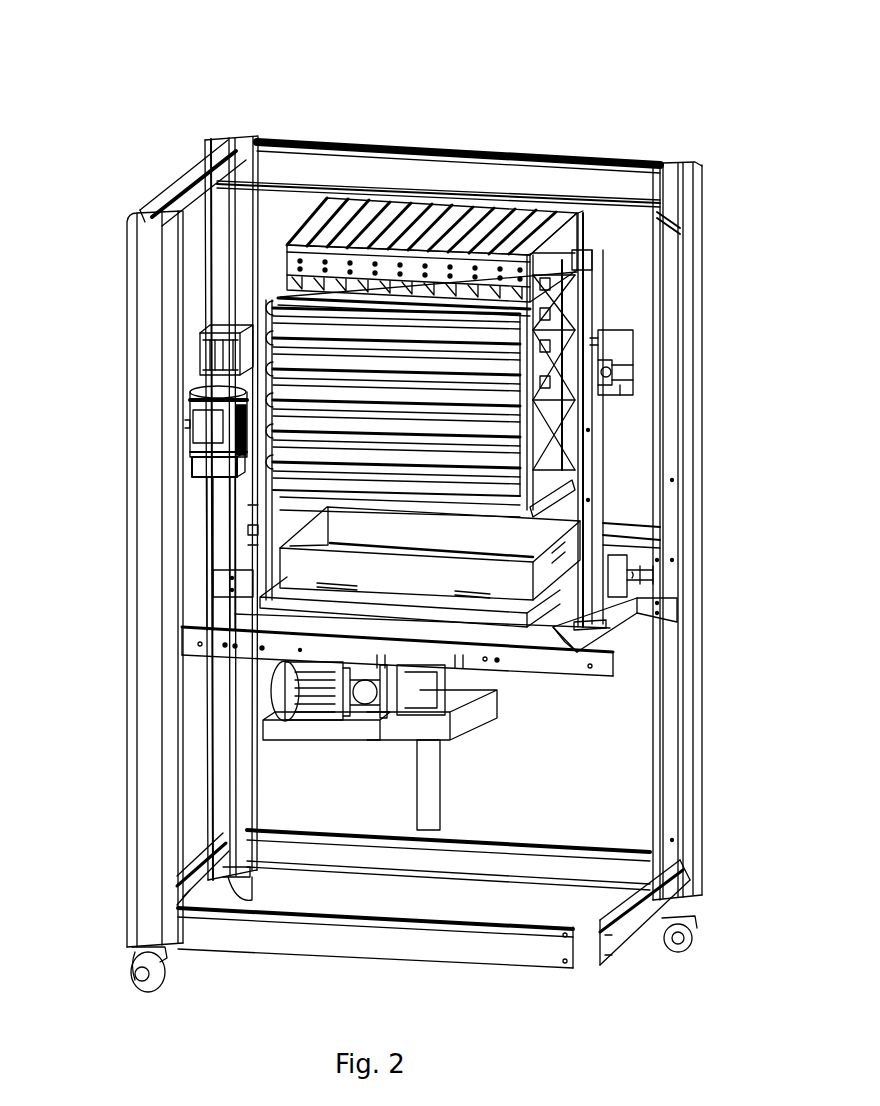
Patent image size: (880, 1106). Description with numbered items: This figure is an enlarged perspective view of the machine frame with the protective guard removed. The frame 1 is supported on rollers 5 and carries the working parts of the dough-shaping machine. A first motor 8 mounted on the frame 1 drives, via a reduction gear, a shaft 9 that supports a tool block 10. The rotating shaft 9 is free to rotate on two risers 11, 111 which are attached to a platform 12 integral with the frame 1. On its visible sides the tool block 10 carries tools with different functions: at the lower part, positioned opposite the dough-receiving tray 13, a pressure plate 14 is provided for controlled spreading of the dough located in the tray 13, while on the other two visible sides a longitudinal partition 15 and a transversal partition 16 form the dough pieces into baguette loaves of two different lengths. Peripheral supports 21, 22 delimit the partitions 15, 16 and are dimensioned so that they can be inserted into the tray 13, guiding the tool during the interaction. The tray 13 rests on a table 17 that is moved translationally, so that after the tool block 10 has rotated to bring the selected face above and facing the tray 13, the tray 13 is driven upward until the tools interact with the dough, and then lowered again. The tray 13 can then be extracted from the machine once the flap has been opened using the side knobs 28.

The frame 1 is at (490, 147).
The rollers 5 is at (180, 988).
The first motor 8 is at (208, 468).
The shaft 9 is at (603, 343).
The tool block 10 is at (600, 240).
The riser 11 is at (620, 450).
The platform 12 is at (612, 637).
The dough-receiving tray 13 is at (516, 583).
The pressure plate 14 is at (552, 497).
The longitudinal partition 15 is at (290, 377).
The transversal partition 16 is at (340, 205).
The table 17 is at (365, 622).
The peripheral support 21 is at (275, 315).
The peripheral support 22 is at (538, 190).
The side knobs 28 is at (553, 543).
The riser 111 is at (262, 556).